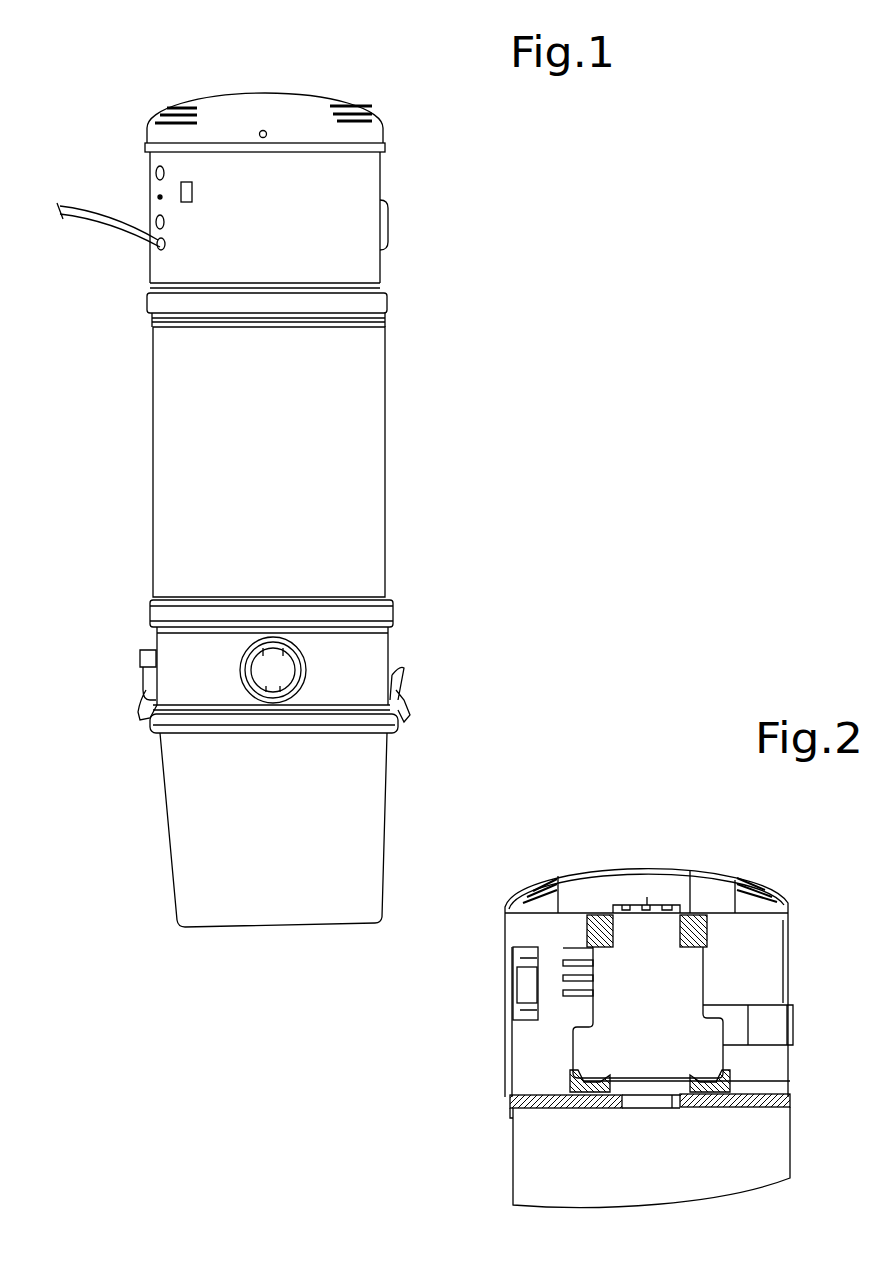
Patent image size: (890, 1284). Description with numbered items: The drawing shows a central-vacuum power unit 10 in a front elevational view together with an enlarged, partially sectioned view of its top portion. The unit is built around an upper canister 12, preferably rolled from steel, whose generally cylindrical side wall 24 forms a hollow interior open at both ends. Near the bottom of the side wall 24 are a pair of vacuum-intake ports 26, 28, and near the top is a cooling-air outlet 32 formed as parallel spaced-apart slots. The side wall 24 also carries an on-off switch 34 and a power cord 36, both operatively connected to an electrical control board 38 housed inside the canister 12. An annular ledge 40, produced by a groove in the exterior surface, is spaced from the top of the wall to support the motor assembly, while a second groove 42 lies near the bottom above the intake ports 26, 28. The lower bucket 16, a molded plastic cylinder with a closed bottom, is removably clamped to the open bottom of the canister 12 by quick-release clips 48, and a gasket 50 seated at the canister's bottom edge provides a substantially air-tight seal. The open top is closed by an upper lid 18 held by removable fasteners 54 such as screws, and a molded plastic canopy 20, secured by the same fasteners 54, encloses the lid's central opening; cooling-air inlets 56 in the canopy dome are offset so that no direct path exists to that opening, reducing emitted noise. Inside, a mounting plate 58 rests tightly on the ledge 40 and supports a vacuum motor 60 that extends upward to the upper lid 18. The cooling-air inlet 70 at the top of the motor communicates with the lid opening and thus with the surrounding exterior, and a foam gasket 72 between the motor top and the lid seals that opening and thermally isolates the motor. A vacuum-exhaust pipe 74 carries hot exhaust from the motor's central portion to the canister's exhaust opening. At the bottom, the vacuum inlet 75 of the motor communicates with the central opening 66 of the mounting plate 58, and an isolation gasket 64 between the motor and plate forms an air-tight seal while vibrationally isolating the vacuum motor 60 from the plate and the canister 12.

In FIG. 1, the central-vacuum power unit 10 is at (455, 230).
In FIG. 1, the canister 12 is at (216, 462).
In FIG. 2, the canister 12 is at (611, 1157).
In FIG. 1, the bucket 16 is at (167, 847).
In FIG. 1, the upper lid 18 is at (147, 147).
In FIG. 2, the upper lid 18 is at (507, 940).
In FIG. 1, the canopy 20 is at (147, 125).
In FIG. 2, the canopy 20 is at (653, 867).
In FIG. 1, the side wall 24 is at (155, 540).
In FIG. 2, the side wall 24 is at (513, 1160).
In FIG. 1, the vacuum-intake port 26 is at (248, 694).
In FIG. 1, the vacuum-intake port 28 is at (147, 652).
In FIG. 2, the cooling-air outlet 32 is at (587, 945).
In FIG. 1, the on-off switch 34 is at (181, 187).
In FIG. 1, the power cord 36 is at (96, 228).
In FIG. 2, the electrical control board 38 is at (530, 1018).
In FIG. 1, the ledge 40 is at (383, 311).
In FIG. 2, the ledge 40 is at (510, 1103).
In FIG. 1, the groove 42 is at (397, 613).
In FIG. 1, the quick-release clips 48 is at (407, 700).
In FIG. 1, the gasket 50 is at (408, 722).
In FIG. 1, the removable fasteners 54 is at (268, 128).
In FIG. 1, the cooling-air inlets 56 is at (350, 107).
In FIG. 2, the cooling-air inlets 56 is at (738, 892).
In FIG. 2, the mounting plate 58 is at (545, 1092).
In FIG. 2, the vacuum motor 60 is at (575, 1048).
In FIG. 2, the isolation gasket 64 is at (725, 1087).
In FIG. 2, the central opening 66 is at (678, 1099).
In FIG. 2, the cooling-air inlet 70 is at (657, 906).
In FIG. 2, the gasket 72 is at (708, 933).
In FIG. 1, the vacuum-exhaust pipe 74 is at (388, 213).
In FIG. 2, the vacuum-exhaust pipe 74 is at (731, 1003).
In FIG. 2, the vacuum inlet 75 is at (661, 1082).